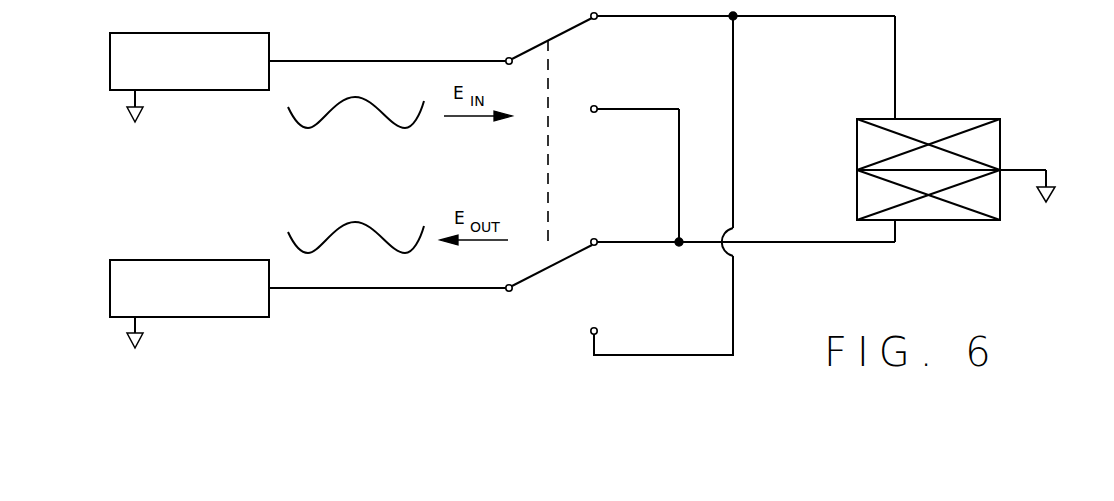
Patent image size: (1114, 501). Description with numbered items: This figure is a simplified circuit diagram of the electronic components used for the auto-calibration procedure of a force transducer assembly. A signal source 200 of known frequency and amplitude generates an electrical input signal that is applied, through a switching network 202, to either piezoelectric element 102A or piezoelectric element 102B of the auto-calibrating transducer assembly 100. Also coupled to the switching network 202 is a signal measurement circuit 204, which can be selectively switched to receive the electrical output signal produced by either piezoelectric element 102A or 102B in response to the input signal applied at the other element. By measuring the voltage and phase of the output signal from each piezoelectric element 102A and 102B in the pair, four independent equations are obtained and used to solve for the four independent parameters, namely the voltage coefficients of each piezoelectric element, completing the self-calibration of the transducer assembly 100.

The auto-calibrating transducer assembly 100 is at (847, 138).
The piezoelectric element 102A is at (980, 146).
The piezoelectric element 102B is at (940, 214).
The signal source 200 is at (207, 80).
The switching network 202 is at (758, 348).
The signal measurement circuit 204 is at (203, 306).